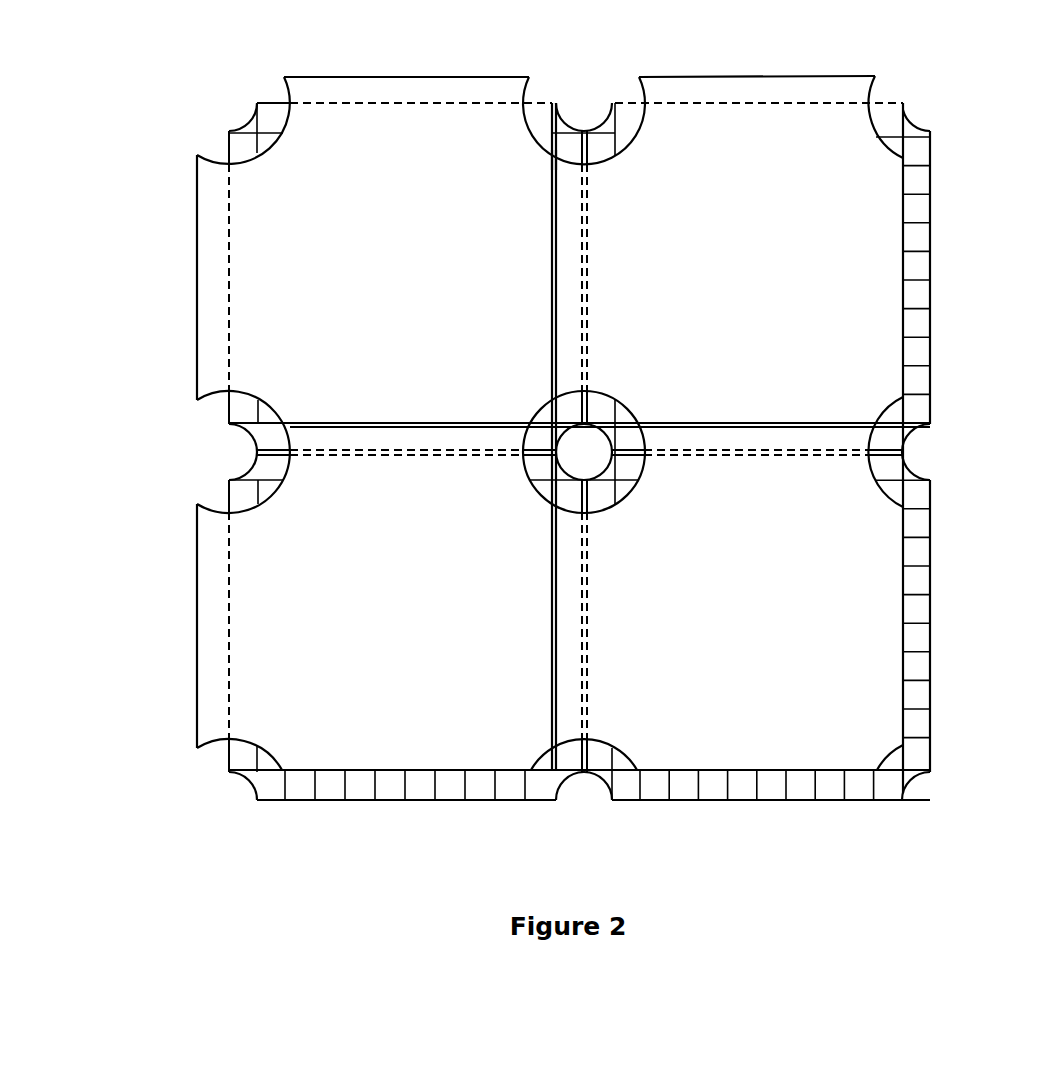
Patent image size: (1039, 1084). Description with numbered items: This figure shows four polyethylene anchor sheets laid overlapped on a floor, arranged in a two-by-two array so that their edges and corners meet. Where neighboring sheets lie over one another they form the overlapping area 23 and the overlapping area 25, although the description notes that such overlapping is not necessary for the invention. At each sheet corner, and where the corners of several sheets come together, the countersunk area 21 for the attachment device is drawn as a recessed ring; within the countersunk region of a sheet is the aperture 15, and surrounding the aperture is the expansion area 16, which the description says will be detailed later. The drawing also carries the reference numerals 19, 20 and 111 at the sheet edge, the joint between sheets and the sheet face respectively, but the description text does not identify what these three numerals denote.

The aperture 15 is at (735, 785).
The expansion area 16 is at (922, 293).
The tile edge 19 is at (215, 752).
The base layer edge 20 is at (568, 773).
The countersunk area 21 is at (228, 493).
The overlapping area 23 is at (592, 132).
The overlapping area 25 is at (550, 150).
The tile 111 is at (325, 748).